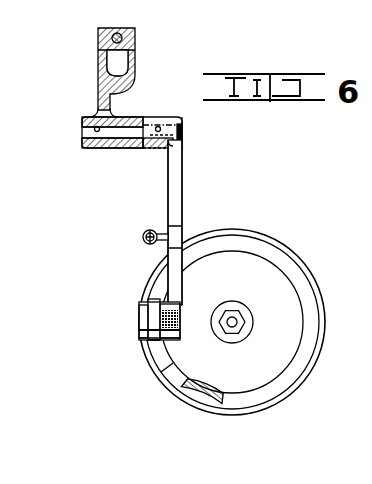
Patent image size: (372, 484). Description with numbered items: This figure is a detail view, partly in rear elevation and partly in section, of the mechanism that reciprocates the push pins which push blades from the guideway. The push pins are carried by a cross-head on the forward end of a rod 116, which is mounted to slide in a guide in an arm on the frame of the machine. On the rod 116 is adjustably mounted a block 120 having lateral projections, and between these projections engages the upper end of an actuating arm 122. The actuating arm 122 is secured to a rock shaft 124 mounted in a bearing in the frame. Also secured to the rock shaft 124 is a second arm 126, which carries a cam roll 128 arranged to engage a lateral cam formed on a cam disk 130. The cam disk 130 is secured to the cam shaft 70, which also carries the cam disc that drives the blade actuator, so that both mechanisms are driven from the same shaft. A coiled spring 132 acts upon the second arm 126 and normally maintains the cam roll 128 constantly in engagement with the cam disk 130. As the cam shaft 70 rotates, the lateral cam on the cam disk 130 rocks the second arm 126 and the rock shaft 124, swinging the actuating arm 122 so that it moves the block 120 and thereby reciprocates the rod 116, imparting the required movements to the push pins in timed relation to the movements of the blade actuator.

The cam shaft 70 is at (245, 321).
The rod 116 is at (136, 41).
The block 120 is at (118, 29).
The actuating arm 122 is at (136, 62).
The rock shaft 124 is at (120, 133).
The second arm 126 is at (180, 170).
The cam roll 128 is at (148, 301).
The cam disk 130 is at (148, 356).
The coiled spring 132 is at (143, 241).